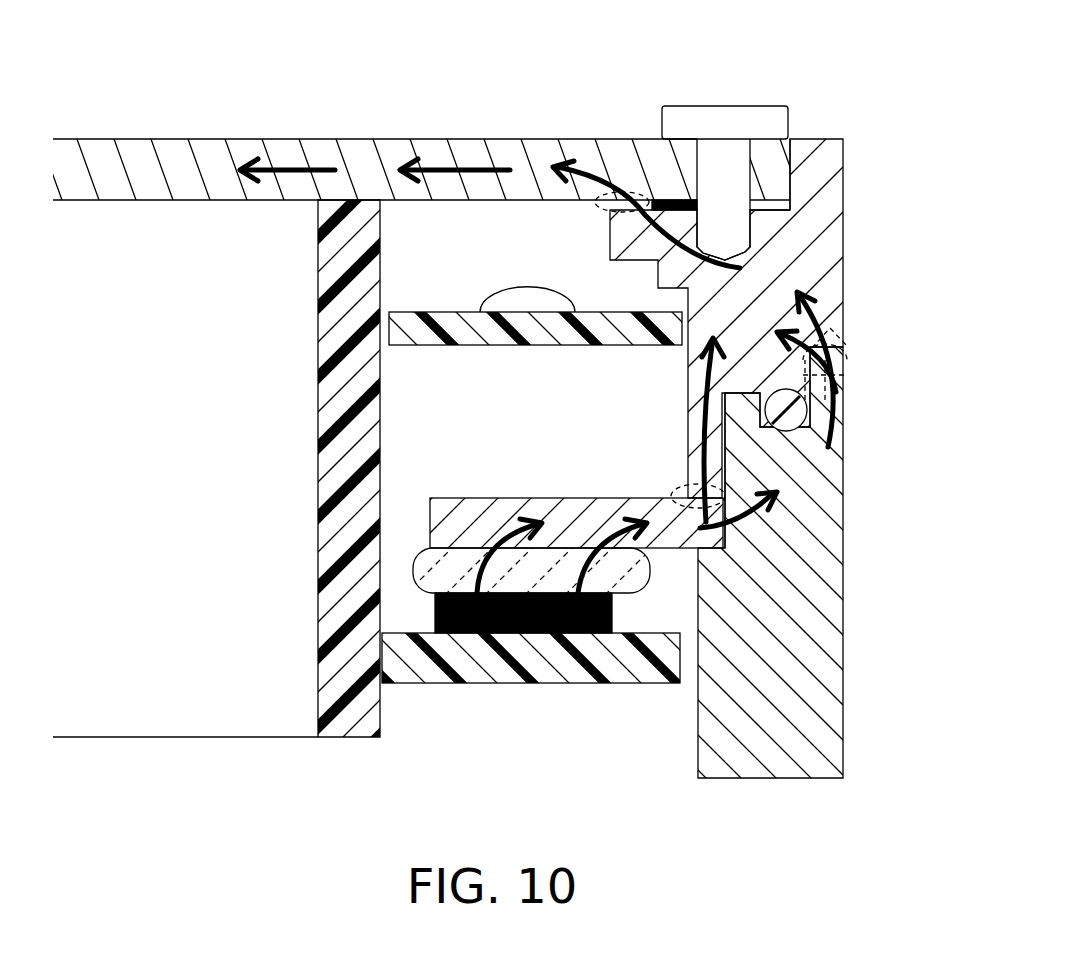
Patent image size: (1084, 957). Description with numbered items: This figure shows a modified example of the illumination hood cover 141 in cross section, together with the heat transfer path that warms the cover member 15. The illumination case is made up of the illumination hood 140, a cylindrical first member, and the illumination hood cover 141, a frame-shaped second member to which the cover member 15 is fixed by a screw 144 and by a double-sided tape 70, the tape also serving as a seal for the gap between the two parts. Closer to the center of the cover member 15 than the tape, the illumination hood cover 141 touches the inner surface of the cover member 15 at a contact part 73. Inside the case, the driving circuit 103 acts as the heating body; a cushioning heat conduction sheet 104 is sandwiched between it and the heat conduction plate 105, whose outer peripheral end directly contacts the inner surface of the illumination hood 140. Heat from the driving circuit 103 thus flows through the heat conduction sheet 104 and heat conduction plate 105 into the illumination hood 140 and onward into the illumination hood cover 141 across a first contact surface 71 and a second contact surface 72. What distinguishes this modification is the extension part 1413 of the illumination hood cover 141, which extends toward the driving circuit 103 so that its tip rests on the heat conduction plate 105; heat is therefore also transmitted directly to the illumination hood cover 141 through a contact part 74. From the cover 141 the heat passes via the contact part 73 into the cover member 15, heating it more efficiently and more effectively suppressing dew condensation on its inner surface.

The cover member 15 is at (168, 139).
The contact part 73 is at (637, 197).
The double-sided tape 70 is at (673, 197).
The screw 144 is at (713, 114).
The illumination hood cover 141 is at (843, 250).
The first contact surface 71 is at (850, 347).
The second contact surface 72 is at (850, 367).
The extension part 1413 is at (688, 433).
The heat conduction sheet 104 is at (422, 555).
The heat conduction plate 105 is at (530, 498).
The contact part 74 is at (672, 490).
The illumination hood 140 is at (843, 590).
The driving circuit 103 is at (618, 608).